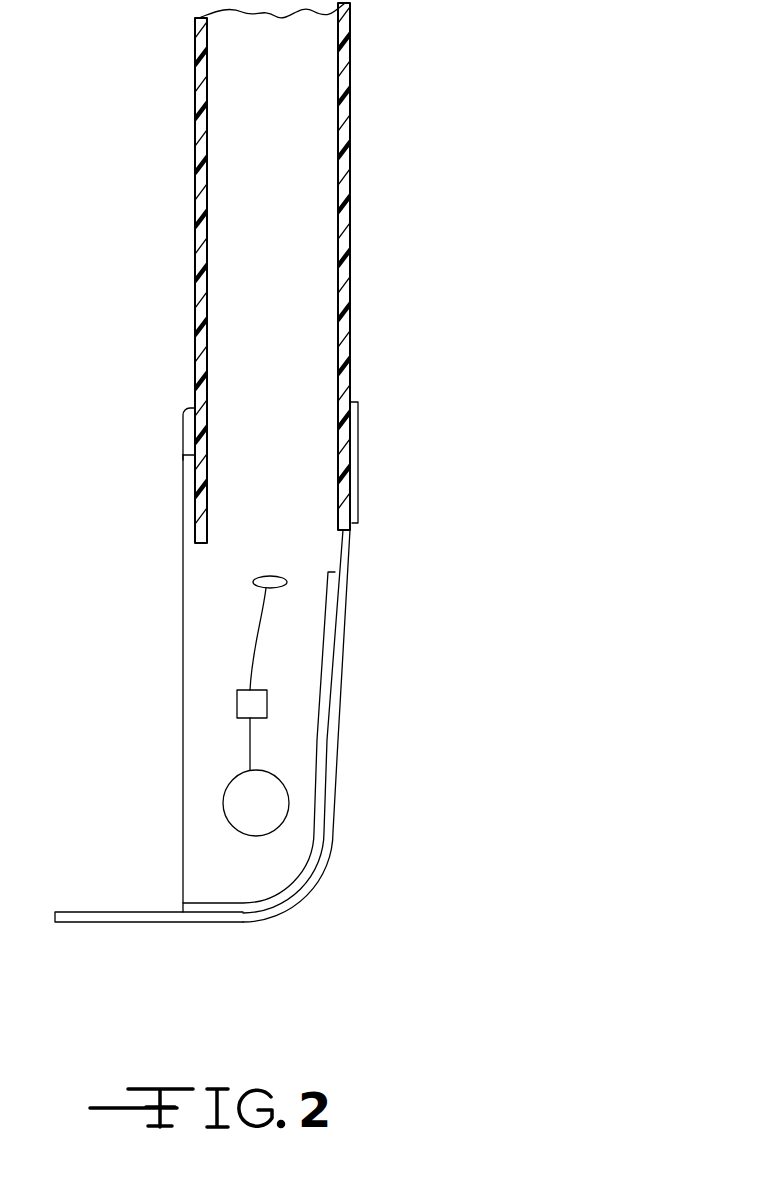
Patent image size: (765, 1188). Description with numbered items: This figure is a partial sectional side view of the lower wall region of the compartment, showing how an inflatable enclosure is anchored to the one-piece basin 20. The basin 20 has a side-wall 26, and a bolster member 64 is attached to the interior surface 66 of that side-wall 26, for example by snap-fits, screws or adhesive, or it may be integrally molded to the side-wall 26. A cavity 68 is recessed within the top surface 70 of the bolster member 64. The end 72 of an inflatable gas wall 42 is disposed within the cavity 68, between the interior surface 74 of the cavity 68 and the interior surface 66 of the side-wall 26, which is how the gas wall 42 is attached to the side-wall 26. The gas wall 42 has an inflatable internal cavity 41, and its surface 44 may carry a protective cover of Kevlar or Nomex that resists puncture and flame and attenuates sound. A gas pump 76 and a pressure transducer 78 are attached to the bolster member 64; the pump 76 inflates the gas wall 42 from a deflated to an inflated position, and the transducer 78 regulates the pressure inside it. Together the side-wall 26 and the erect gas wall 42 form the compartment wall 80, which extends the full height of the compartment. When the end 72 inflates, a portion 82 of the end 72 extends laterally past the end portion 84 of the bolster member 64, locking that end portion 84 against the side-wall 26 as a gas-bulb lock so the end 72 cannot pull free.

The one-piece basin 20 is at (245, 922).
The side-wall 26 is at (340, 718).
The inflatable internal cavity 41 is at (245, 148).
The inflatable gas-wall 42 is at (218, 247).
The surface of inflatable wall 44 is at (196, 80).
The bolster member 64 is at (183, 592).
The interior surface of side-wall 66 is at (352, 432).
The cavity of bolster member 68 is at (225, 538).
The top surface of bolster member 70 is at (190, 403).
The end of inflatable gas wall 72 is at (325, 557).
The interior surface of cavity 74 is at (193, 455).
The gas pump 76 is at (289, 808).
The pressure transducer 78 is at (237, 705).
The compartment wall 80 is at (320, 318).
The portion of end 82 is at (345, 545).
The end portion of bolster member 84 is at (347, 530).